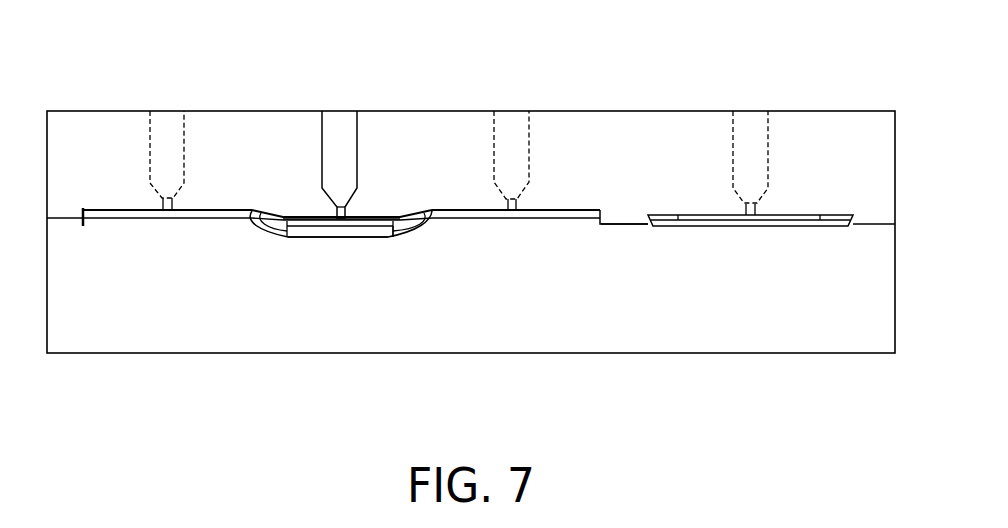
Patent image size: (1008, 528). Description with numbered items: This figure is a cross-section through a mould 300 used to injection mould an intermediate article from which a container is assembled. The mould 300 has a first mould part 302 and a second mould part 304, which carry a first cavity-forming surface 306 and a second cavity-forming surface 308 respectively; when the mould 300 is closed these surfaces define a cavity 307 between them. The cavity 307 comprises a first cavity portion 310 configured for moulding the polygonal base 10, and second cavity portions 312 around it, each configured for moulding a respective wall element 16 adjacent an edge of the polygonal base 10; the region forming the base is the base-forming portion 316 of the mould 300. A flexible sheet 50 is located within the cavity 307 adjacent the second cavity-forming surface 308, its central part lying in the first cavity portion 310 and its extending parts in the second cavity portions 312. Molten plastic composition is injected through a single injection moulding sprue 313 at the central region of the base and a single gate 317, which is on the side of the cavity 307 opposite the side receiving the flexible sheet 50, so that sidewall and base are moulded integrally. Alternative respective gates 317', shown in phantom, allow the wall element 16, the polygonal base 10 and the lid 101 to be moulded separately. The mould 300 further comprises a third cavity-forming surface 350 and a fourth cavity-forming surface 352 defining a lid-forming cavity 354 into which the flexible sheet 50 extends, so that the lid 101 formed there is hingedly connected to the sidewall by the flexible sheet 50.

The mould 300 is at (112, 72).
The first mould part 302 is at (190, 242).
The first cavity-forming surface 306 is at (237, 220).
The second mould part 304 is at (367, 122).
The second cavity-forming surface 308 is at (370, 210).
The first cavity portion 310 is at (402, 212).
The cavity 307 is at (463, 210).
The second cavity portions 312 is at (528, 210).
The flexible sheet 50 is at (622, 222).
The fourth cavity-forming surface 352 is at (690, 215).
The lid-forming cavity 354 is at (732, 214).
The gate 317' is at (467, 233).
The polygonal base 10 is at (291, 238).
The gate 317 is at (318, 314).
The injection moulding sprue 313 is at (353, 232).
The base-forming portion 316 is at (402, 232).
The wall element 16 is at (585, 224).
The third cavity-forming surface 350 is at (697, 226).
The lid 101 is at (788, 226).